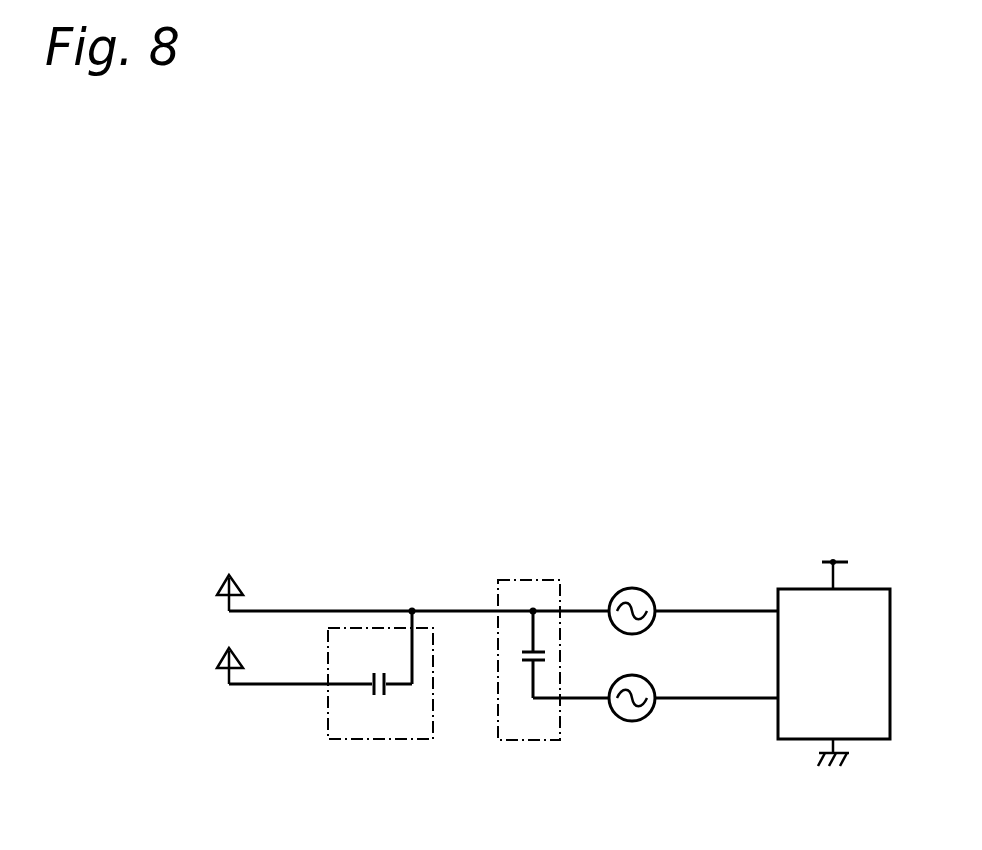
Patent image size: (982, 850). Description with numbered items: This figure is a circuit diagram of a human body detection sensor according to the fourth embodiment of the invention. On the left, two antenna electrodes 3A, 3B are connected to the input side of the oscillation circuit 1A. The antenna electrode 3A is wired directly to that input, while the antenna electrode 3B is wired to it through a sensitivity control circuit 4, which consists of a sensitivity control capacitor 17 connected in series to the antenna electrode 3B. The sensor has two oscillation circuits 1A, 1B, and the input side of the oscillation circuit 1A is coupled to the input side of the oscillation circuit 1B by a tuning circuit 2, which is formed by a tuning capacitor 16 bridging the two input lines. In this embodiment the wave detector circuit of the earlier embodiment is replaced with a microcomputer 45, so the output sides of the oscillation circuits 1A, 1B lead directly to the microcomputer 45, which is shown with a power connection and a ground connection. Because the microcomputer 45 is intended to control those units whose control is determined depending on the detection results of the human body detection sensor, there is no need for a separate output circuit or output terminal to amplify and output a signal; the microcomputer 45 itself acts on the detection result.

The antenna electrode 3A is at (229, 575).
The antenna electrode 3B is at (226, 670).
The sensitivity control circuit 4 is at (377, 740).
The sensitivity control capacitor 17 is at (374, 676).
The tuning circuit 2 is at (517, 740).
The tuning capacitor 16 is at (522, 652).
The oscillation circuit 1A is at (632, 588).
The oscillation circuit 1B is at (630, 722).
The microcomputer 45 is at (800, 589).